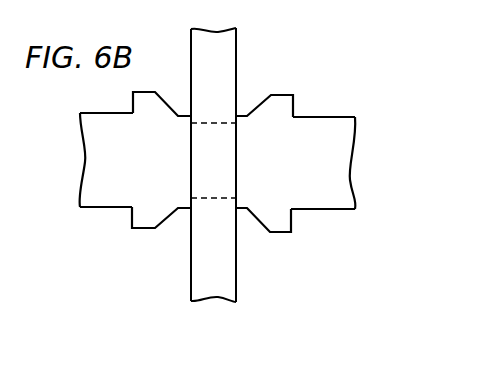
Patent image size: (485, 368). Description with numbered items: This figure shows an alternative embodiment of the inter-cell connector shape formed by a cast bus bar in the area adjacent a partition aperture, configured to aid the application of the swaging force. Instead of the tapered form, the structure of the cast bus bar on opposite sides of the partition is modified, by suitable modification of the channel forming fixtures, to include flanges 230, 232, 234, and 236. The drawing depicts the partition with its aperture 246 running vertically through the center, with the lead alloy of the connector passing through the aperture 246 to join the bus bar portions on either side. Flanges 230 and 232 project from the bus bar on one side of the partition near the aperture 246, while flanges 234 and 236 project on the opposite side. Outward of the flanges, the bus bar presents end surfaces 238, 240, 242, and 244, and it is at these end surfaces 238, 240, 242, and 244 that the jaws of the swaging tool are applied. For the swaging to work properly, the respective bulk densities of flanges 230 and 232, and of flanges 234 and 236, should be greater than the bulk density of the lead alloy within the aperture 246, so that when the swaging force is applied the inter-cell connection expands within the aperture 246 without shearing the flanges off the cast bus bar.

The flange 230 is at (147, 98).
The flange 232 is at (276, 102).
The flange 234 is at (145, 219).
The flange 236 is at (281, 222).
The end surface 238 is at (130, 103).
The end surface 240 is at (298, 102).
The end surface 242 is at (130, 219).
The end surface 244 is at (293, 222).
The aperture 246 is at (222, 170).